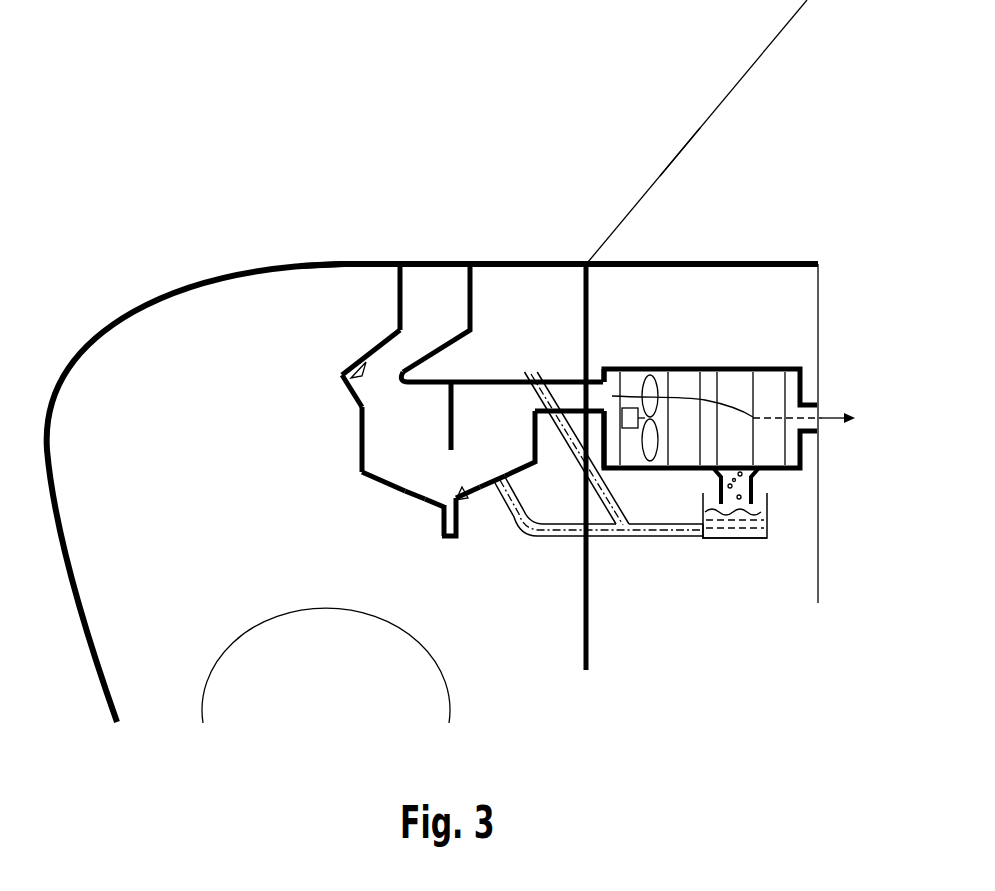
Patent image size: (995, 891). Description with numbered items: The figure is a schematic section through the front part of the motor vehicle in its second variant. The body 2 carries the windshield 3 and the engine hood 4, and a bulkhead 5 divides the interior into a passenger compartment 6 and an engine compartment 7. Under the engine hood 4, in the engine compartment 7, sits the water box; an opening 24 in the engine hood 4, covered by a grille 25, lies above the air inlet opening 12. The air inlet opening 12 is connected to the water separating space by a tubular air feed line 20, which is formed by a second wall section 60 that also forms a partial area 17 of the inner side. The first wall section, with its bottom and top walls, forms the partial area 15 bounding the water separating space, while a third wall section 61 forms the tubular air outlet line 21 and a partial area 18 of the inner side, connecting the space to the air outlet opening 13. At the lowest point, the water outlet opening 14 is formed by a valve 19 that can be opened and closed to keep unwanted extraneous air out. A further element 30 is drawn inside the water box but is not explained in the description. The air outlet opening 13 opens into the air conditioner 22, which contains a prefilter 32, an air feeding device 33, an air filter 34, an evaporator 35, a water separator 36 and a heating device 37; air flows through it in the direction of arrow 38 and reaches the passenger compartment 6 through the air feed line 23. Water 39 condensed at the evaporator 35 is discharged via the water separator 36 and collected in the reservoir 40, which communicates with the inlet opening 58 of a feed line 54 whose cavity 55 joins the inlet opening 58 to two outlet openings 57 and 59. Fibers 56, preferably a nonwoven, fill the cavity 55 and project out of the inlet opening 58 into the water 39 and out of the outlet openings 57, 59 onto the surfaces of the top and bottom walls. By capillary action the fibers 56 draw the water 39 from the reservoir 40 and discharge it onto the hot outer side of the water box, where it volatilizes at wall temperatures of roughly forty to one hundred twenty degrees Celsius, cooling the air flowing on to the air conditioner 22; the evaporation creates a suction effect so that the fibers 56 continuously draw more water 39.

The body 2 is at (133, 312).
The engine hood 4 is at (188, 290).
The engine compartment 7 is at (235, 310).
The grille 25 is at (422, 263).
The opening 24 is at (410, 263).
The air inlet opening 12 is at (433, 280).
The air feed line 20 is at (398, 295).
The second wall section 60 is at (365, 368).
The partial area 17 is at (354, 362).
The valve 19 is at (440, 537).
The water outlet opening 14 is at (452, 540).
The partial area 15 is at (470, 503).
The outlet opening 59 is at (493, 500).
The partition 30 is at (448, 397).
The outlet opening 57 is at (497, 371).
The third wall section 61 is at (572, 393).
The fibers 56 is at (572, 453).
The feed line 54 is at (648, 538).
The cavity 55 is at (686, 538).
The partial area 18 is at (547, 377).
The bulkhead 5 is at (590, 645).
The windshield 3 is at (724, 97).
The passenger compartment 6 is at (708, 198).
The air conditioner 22 is at (722, 356).
The air outlet opening 13 is at (615, 397).
The air outlet line 21 is at (593, 375).
The prefilter 32 is at (607, 393).
The air feeding device 33 is at (653, 462).
The air filter 34 is at (685, 387).
The evaporator 35 is at (737, 387).
The heating device 37 is at (772, 388).
The water separator 36 is at (717, 473).
The arrow 38 is at (836, 405).
The air feed line 23 is at (818, 403).
The reservoir 40 is at (767, 510).
The water 39 is at (742, 518).
The inlet opening 58 is at (708, 540).